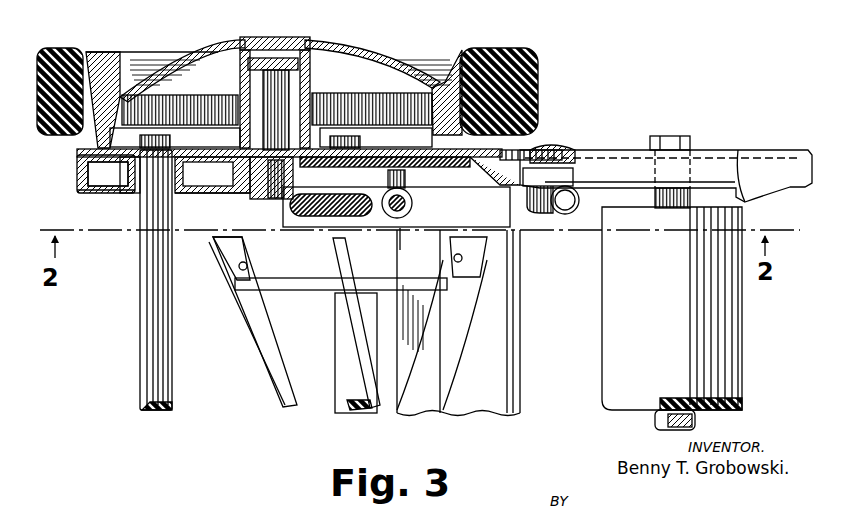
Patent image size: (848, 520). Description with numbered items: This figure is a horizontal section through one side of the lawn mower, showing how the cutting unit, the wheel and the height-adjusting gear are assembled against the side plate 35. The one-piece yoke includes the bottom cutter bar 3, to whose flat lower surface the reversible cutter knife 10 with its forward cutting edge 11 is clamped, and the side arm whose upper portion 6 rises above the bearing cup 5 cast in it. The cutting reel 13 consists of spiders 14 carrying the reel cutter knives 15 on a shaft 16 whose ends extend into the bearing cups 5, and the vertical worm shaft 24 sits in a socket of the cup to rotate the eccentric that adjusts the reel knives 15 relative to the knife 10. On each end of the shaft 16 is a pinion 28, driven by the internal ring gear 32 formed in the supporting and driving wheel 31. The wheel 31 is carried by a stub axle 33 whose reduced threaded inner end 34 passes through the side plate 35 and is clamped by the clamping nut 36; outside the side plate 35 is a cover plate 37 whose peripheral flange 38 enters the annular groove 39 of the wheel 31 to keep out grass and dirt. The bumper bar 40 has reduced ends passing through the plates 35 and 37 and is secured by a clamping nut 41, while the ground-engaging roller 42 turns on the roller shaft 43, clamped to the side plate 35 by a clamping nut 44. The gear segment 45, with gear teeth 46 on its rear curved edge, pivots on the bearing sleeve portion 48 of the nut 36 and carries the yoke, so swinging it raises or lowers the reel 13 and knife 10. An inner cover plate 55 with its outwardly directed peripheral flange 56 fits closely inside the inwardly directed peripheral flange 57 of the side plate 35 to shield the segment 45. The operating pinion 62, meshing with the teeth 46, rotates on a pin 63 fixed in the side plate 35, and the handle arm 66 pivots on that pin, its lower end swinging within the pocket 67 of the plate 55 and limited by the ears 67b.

The bottom cutter bar 3 is at (490, 344).
The bearing cup 5 is at (290, 225).
The upper portion of arm 6 is at (372, 216).
The cutter knife 10 is at (410, 317).
The forward cutting edge 11 is at (400, 343).
The cutting reel 13 is at (332, 322).
The spiders 14 is at (318, 280).
The reel cutter knives 15 is at (250, 320).
The shaft 16 is at (345, 376).
The worm shaft 24 is at (413, 204).
The pinion 28 is at (350, 125).
The supporting and driving wheel 31 is at (442, 46).
The internal ring gear 32 is at (395, 68).
The stub axle 33 is at (270, 80).
The reduced threaded inner end 34 is at (276, 185).
The side plate 35 is at (186, 190).
The clamping nut 36 is at (262, 185).
The cover plate 37 is at (128, 165).
The peripheral flange 38 is at (82, 140).
The annular groove 39 is at (95, 52).
The bumper bar 40 is at (150, 318).
The clamping nut 41 is at (165, 140).
The ground-engaging roller 42 is at (604, 299).
The roller shaft 43 is at (672, 188).
The clamping nut 44 is at (672, 140).
The gear segment 45 is at (331, 194).
The gear teeth 46 is at (410, 174).
The bearing sleeve portion 48 is at (240, 168).
The cover plate 55 is at (96, 194).
The peripheral flange 56 is at (108, 174).
The peripheral flange 57 is at (80, 184).
The operating pinion 62 is at (520, 150).
The pin 63 is at (560, 150).
The handle arm 66 is at (565, 212).
The pocket 67 is at (630, 185).
The ears 67b is at (740, 187).